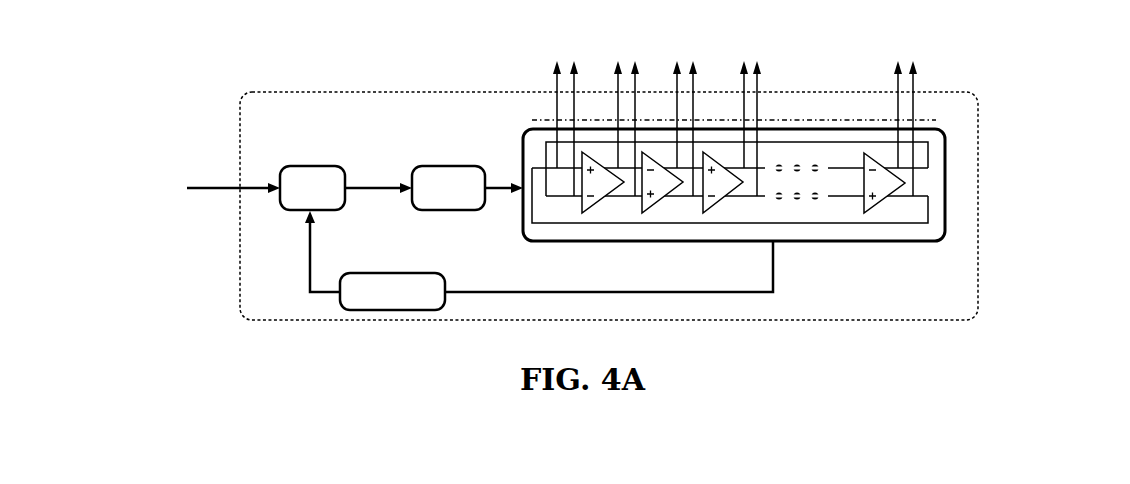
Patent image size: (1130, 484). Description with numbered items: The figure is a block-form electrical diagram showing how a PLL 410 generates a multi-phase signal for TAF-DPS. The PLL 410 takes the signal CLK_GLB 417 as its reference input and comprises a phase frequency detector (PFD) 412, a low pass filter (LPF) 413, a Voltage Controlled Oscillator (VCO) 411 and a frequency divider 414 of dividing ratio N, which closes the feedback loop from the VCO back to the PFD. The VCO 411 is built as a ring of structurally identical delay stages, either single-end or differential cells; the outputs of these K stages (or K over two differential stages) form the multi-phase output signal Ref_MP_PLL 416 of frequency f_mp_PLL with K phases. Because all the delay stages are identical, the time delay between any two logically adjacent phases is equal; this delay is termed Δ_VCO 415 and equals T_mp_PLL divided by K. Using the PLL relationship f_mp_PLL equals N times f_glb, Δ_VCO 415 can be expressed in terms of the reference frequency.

The PLL 410 is at (398, 47).
The Voltage Controlled Oscillator (VCO) 411 is at (943, 263).
The phase frequency detector (PFD) 412 is at (318, 156).
The low pass filter (LPF) 413 is at (448, 156).
The frequency divider 414 is at (410, 262).
The Δ_VCO 415 is at (836, 57).
The multi-phase signal Ref_MP_PLL 416 is at (957, 66).
The signal CLK_GLB 417 is at (146, 150).